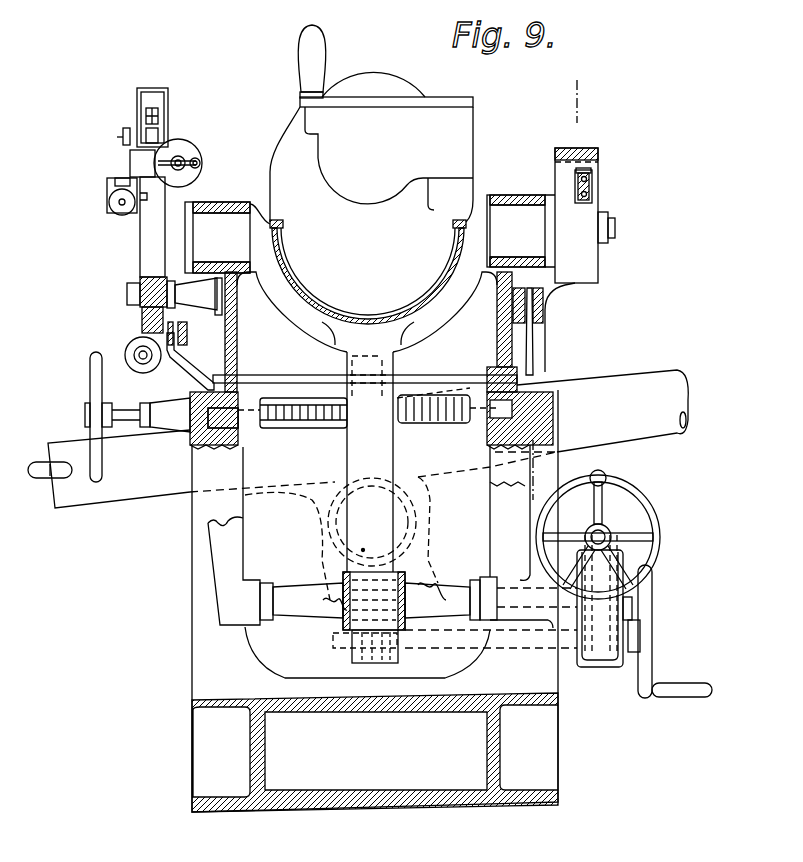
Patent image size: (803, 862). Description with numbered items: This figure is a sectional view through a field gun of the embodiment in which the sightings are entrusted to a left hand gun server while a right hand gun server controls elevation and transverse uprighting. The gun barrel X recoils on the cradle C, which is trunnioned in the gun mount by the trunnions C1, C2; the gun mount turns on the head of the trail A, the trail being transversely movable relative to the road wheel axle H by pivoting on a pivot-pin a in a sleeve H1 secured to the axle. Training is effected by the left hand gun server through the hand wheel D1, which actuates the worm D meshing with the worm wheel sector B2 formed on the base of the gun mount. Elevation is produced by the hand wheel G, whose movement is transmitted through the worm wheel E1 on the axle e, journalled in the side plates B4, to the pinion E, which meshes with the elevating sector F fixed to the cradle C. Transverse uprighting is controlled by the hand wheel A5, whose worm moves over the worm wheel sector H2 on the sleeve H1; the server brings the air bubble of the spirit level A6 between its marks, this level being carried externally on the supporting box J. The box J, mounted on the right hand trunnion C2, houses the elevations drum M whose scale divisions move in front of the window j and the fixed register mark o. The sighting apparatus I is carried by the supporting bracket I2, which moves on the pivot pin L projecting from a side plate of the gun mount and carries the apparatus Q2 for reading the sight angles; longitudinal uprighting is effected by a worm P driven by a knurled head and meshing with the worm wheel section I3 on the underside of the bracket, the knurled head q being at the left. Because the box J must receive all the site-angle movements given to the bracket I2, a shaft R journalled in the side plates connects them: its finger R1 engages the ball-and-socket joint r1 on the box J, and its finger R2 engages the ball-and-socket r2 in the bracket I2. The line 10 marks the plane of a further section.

The gun barrel X is at (285, 147).
The cradle trunnion C1 is at (213, 211).
The cradle trunnion C2 is at (508, 210).
The cradle C is at (300, 308).
The trail A is at (200, 668).
The worm D is at (375, 428).
The shaft R is at (262, 378).
The worm wheel sector B2 is at (428, 420).
The sighting apparatus I is at (137, 152).
The supporting bracket I2 is at (147, 242).
The apparatus for reading the sight angles Q2 is at (118, 180).
The disc q is at (110, 210).
The pivot pin L is at (140, 303).
The worm wheel section I3 is at (142, 330).
The ball-and-socket r2 is at (188, 340).
The wheel P is at (147, 365).
The finger R2 is at (193, 362).
The hand wheel D1 is at (92, 380).
The road wheel axle H is at (127, 492).
The finger R1 is at (531, 355).
The ball-and-socket joint r1 is at (545, 318).
The supporting box J is at (590, 262).
The spirit level A6 is at (553, 155).
The fixed register mark o is at (592, 185).
The elevations drum M is at (598, 168).
The window j is at (595, 197).
The section line 10 is at (566, 290).
The side plates B4 is at (222, 583).
The sleeve H1 is at (287, 490).
The pivot-pin a is at (412, 517).
The elevating sector F is at (363, 550).
The pinion E is at (345, 622).
The axle e is at (458, 590).
The worm wheel sector H2 is at (440, 578).
The hand wheel G is at (655, 520).
The hand wheel A5 is at (645, 600).
The worm wheel E1 is at (607, 655).